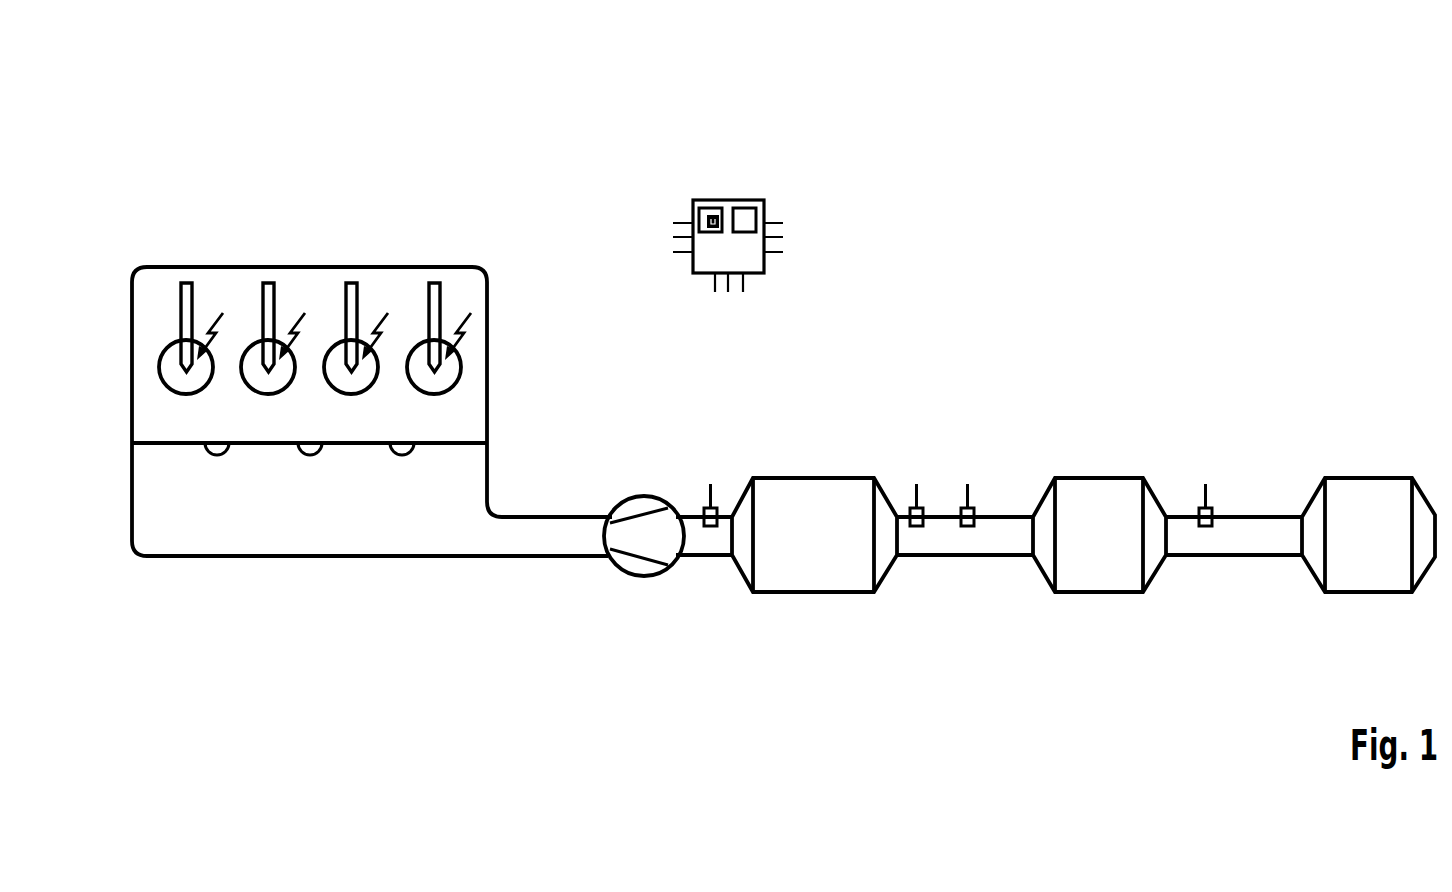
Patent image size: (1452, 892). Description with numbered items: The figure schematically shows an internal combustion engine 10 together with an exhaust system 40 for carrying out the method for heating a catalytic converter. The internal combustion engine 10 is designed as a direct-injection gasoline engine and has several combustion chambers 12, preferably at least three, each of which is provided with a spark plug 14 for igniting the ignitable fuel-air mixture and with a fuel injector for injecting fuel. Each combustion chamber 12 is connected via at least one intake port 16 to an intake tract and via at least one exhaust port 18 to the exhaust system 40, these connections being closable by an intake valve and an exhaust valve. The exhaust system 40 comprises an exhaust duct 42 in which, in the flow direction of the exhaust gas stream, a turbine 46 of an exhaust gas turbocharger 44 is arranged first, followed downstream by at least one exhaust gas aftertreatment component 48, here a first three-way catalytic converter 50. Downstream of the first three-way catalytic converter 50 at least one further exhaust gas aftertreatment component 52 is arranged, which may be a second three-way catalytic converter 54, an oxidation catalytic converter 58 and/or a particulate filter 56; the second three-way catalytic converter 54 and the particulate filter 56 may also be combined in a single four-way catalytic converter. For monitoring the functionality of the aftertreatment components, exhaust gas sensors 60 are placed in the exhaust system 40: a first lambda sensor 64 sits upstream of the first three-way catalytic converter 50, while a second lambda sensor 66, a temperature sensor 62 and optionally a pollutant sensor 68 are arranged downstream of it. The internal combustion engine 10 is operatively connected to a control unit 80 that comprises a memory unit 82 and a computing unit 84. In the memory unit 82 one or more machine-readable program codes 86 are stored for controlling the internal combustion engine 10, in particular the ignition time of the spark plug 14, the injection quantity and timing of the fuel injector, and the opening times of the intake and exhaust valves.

The internal combustion engine 10 is at (312, 267).
The combustion chamber 12 is at (178, 376).
The spark plug 14 is at (219, 316).
The intake port 16 is at (202, 180).
The exhaust port 18 is at (263, 532).
The exhaust system 40 is at (976, 379).
The exhaust duct 42 is at (552, 540).
The exhaust gas turbocharger 44 is at (644, 578).
The turbine 46 is at (635, 577).
The exhaust gas aftertreatment component 48 is at (814, 491).
The first three-way catalytic converter 50 is at (814, 491).
The further exhaust gas aftertreatment component 52 is at (1099, 493).
The second three-way catalytic converter 54 is at (1097, 475).
The particulate filter 56 is at (1365, 475).
The oxidation catalytic converter 58 is at (817, 474).
The exhaust gas sensor 60 is at (1101, 465).
The temperature sensor 62 is at (918, 497).
The first lambda sensor 64 is at (707, 498).
The second lambda sensor 66 is at (973, 497).
The pollutant sensor 68 is at (1207, 498).
The control unit 80 is at (745, 200).
The memory unit 82 is at (705, 217).
The computing unit 84 is at (752, 217).
The machine-readable program code 86 is at (716, 210).